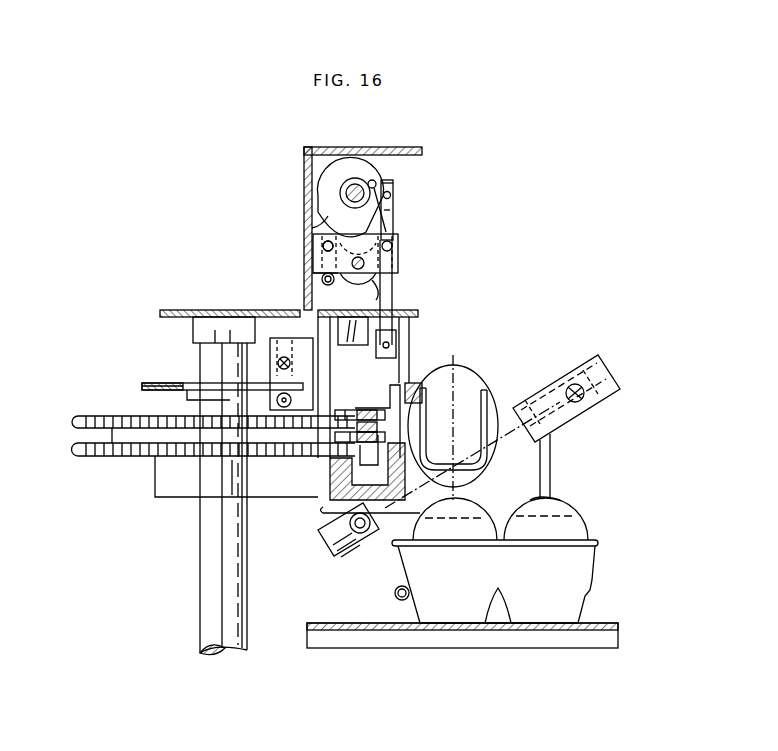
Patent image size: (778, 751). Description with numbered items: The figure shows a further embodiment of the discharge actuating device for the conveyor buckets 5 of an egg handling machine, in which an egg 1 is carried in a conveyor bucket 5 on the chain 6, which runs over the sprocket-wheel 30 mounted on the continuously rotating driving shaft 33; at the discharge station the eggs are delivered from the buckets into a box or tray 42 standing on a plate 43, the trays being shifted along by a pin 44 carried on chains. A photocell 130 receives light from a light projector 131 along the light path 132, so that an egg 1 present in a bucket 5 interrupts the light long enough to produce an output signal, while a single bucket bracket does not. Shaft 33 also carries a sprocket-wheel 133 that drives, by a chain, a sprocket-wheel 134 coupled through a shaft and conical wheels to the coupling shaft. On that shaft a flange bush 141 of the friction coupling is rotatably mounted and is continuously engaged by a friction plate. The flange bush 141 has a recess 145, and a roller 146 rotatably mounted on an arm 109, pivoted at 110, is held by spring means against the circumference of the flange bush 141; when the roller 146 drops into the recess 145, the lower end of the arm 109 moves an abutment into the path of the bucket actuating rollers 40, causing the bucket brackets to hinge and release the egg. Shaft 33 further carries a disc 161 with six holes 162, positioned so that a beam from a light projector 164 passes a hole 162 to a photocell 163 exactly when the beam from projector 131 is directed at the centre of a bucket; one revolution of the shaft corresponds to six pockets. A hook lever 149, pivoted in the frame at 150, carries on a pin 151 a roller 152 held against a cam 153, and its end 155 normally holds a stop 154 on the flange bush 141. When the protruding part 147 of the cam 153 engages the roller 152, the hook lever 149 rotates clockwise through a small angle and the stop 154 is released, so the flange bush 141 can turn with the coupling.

The egg 1 is at (462, 368).
The conveyor bucket 5 is at (490, 392).
The chain 6 is at (358, 408).
The sprocket-wheel 30 is at (104, 457).
The shaft 33 is at (200, 578).
The roller 40 is at (378, 352).
The box or tray 42 is at (594, 572).
The plate 43 is at (320, 623).
The pin 44 is at (394, 594).
The arm 109 is at (394, 300).
The pivot 110 is at (399, 250).
The photocell 130 is at (322, 535).
The light projector 131 is at (618, 392).
The light path 132 is at (502, 445).
The sprocket-wheel 133 is at (170, 310).
The sprocket-wheel 134 is at (412, 318).
The flange bush 141 is at (352, 163).
The recess 145 is at (393, 183).
The roller 146 is at (395, 198).
The protruding part 147 is at (372, 290).
The hook lever 149 is at (320, 224).
The pivot 150 is at (322, 246).
The bracket 151 is at (318, 272).
The roller 152 is at (321, 283).
The cam 153 is at (394, 268).
The stop 154 is at (375, 181).
The end of hook arm 155 is at (396, 232).
The disc 161 is at (142, 385).
The hole 162 is at (176, 383).
The photocell 163 is at (290, 407).
The light projector 164 is at (285, 356).